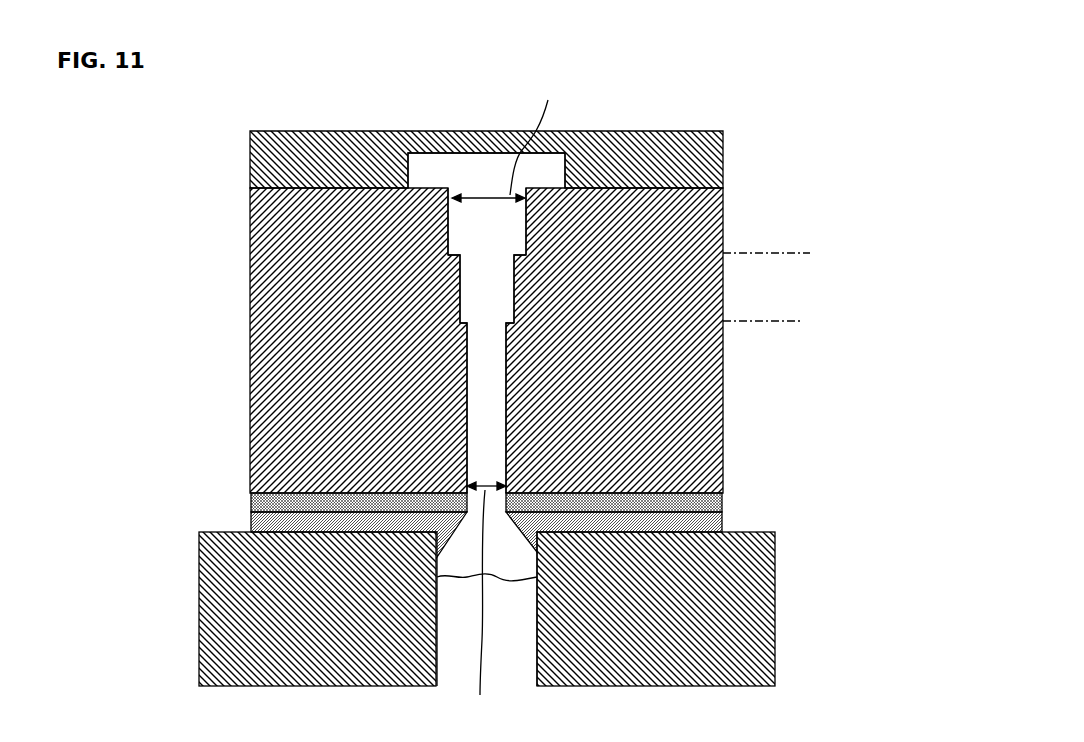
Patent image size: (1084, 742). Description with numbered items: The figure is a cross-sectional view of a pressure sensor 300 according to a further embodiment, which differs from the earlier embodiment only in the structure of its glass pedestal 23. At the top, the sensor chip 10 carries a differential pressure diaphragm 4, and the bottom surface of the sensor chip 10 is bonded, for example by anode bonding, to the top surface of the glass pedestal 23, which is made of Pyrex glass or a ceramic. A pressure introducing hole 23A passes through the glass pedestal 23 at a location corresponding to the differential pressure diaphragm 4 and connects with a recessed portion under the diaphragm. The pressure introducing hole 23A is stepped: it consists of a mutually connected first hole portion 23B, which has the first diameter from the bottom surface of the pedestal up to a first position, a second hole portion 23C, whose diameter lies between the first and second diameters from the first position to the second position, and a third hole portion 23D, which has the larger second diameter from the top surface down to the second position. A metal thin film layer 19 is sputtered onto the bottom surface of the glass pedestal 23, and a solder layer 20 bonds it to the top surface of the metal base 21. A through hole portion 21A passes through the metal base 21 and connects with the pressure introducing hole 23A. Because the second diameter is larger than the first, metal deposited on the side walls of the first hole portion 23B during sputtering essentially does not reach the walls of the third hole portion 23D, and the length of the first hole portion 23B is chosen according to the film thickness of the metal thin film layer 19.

The pressure sensor 300 is at (890, 99).
The sensor chip 10 is at (723, 146).
The differential pressure diaphragm 4 is at (565, 122).
The glass pedestal 23 is at (723, 213).
The pressure introducing hole 23A is at (318, 329).
The first hole portion 23B is at (487, 375).
The second hole portion 23C is at (485, 303).
The third hole portion 23D is at (487, 238).
The metal thin film layer 19 is at (723, 496).
The solder layer 20 is at (723, 520).
The metal base 21 is at (775, 593).
The through hole portion 21A is at (505, 638).